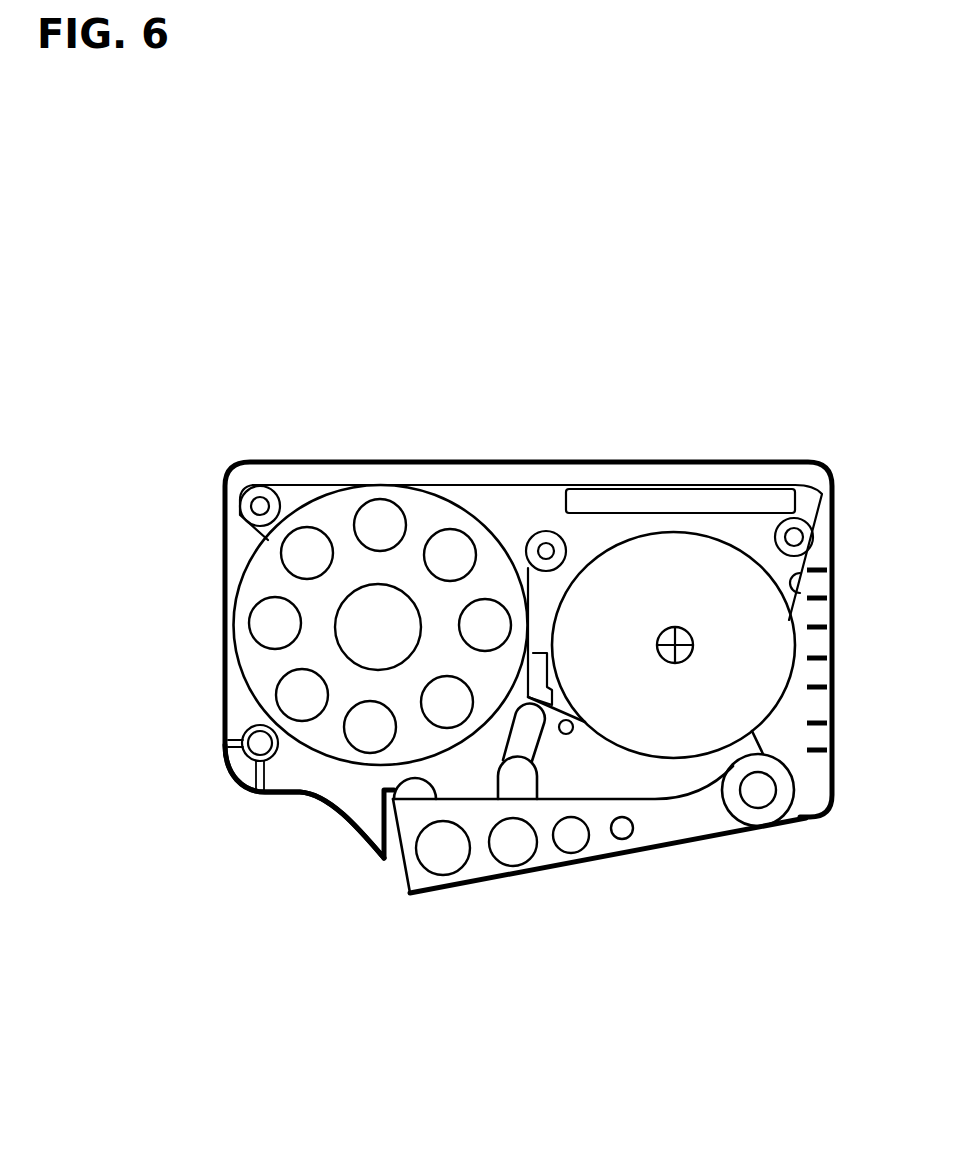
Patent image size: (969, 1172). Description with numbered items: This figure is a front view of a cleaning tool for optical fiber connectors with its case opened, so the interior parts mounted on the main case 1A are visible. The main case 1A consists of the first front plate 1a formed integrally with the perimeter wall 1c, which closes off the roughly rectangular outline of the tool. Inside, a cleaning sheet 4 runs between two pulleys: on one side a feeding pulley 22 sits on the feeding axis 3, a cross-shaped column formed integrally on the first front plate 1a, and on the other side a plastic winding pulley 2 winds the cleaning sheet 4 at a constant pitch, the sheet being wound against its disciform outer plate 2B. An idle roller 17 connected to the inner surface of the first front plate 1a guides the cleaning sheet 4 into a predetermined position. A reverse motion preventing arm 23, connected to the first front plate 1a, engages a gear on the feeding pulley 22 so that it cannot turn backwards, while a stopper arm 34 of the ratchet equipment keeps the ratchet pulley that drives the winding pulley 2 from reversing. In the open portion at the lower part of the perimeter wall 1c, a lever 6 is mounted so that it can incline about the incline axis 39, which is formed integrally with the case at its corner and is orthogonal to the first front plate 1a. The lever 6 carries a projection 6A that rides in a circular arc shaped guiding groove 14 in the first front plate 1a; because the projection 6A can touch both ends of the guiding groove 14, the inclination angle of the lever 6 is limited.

The main case 1A is at (297, 823).
The first front plate 1a is at (533, 510).
The perimeter wall 1c is at (221, 558).
The winding pulley 2 is at (313, 495).
The disciform outer plate 2B is at (423, 522).
The feeding axis 3 is at (687, 651).
The cleaning sheet 4 is at (812, 577).
The lever 6 is at (547, 856).
The projection 6A is at (513, 776).
The guiding groove 14 is at (537, 733).
The idle roller 17 is at (258, 504).
The feeding pulley 22 is at (683, 558).
The reverse motion preventing arm 23 is at (583, 733).
The stopper arm 34 is at (495, 512).
The incline axis 39 is at (763, 797).